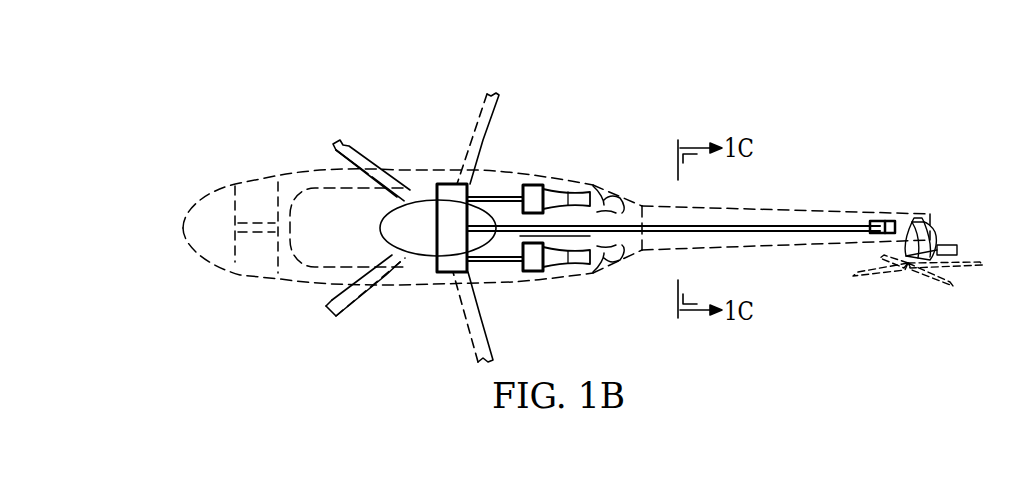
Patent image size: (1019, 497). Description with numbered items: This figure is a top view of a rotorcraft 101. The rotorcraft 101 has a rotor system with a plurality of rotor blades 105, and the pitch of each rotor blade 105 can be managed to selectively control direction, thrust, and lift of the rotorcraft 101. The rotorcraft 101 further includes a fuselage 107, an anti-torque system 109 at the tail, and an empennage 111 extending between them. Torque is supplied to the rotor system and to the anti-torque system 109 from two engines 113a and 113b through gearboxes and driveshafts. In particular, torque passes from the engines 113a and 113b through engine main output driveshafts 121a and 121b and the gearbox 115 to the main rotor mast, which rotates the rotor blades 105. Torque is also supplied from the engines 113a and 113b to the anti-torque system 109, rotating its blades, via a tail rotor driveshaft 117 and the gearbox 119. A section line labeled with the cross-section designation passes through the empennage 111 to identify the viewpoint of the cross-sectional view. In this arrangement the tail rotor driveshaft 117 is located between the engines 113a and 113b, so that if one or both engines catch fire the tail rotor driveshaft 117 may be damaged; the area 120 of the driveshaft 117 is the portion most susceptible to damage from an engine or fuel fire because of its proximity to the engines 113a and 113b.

The rotorcraft 101 is at (356, 62).
The rotor blades 105 is at (372, 152).
The fuselage 107 is at (246, 276).
The anti-torque system 109 is at (945, 300).
The empennage 111 is at (808, 247).
The engine 113a is at (560, 183).
The engine 113b is at (548, 274).
The gearbox 115 is at (447, 274).
The tail rotor driveshaft 117 is at (813, 226).
The gearbox 119 is at (882, 221).
The area 120 is at (566, 274).
The engine main output driveshaft 121a is at (505, 195).
The engine main output driveshaft 121b is at (503, 263).